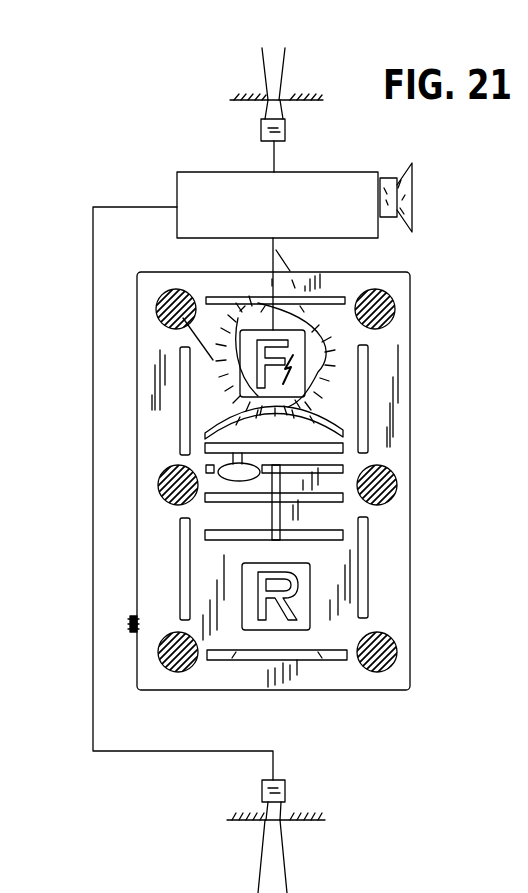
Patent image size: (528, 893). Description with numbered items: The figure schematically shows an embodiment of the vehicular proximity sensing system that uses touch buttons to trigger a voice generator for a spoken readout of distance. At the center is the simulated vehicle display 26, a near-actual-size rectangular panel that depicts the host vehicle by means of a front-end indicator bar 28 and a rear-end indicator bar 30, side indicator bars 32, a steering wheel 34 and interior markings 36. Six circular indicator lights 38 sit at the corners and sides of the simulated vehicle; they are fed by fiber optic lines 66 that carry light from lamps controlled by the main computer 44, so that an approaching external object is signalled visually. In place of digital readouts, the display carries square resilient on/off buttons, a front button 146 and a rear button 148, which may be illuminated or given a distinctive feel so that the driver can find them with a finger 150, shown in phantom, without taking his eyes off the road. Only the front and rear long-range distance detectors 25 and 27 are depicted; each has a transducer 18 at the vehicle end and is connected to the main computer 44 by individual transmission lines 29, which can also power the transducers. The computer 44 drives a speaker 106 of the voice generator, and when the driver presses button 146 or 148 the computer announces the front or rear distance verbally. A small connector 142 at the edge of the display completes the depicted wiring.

The antenna / ground transducer 18 is at (243, 100).
The front long-range distance detector 25 is at (261, 117).
The rear long-range distance detector 27 is at (286, 795).
The transmission lines 29 is at (275, 160).
The main computer 44 is at (198, 172).
The speaker 106 is at (395, 177).
The fiber optic lines 66 is at (276, 245).
The simulated vehicle display 26 is at (381, 272).
The front-end indicator bar 28 is at (232, 298).
The circular indicator lights 38 is at (158, 305).
The side indicator bars 32 is at (187, 372).
The finger 150 is at (193, 338).
The front on/off button 146 is at (297, 350).
The interior markings 36 is at (241, 417).
The steering wheel 34 is at (206, 467).
The rear on/off button 148 is at (305, 617).
The rear-end indicator bar 30 is at (263, 660).
The connector 142 is at (130, 625).